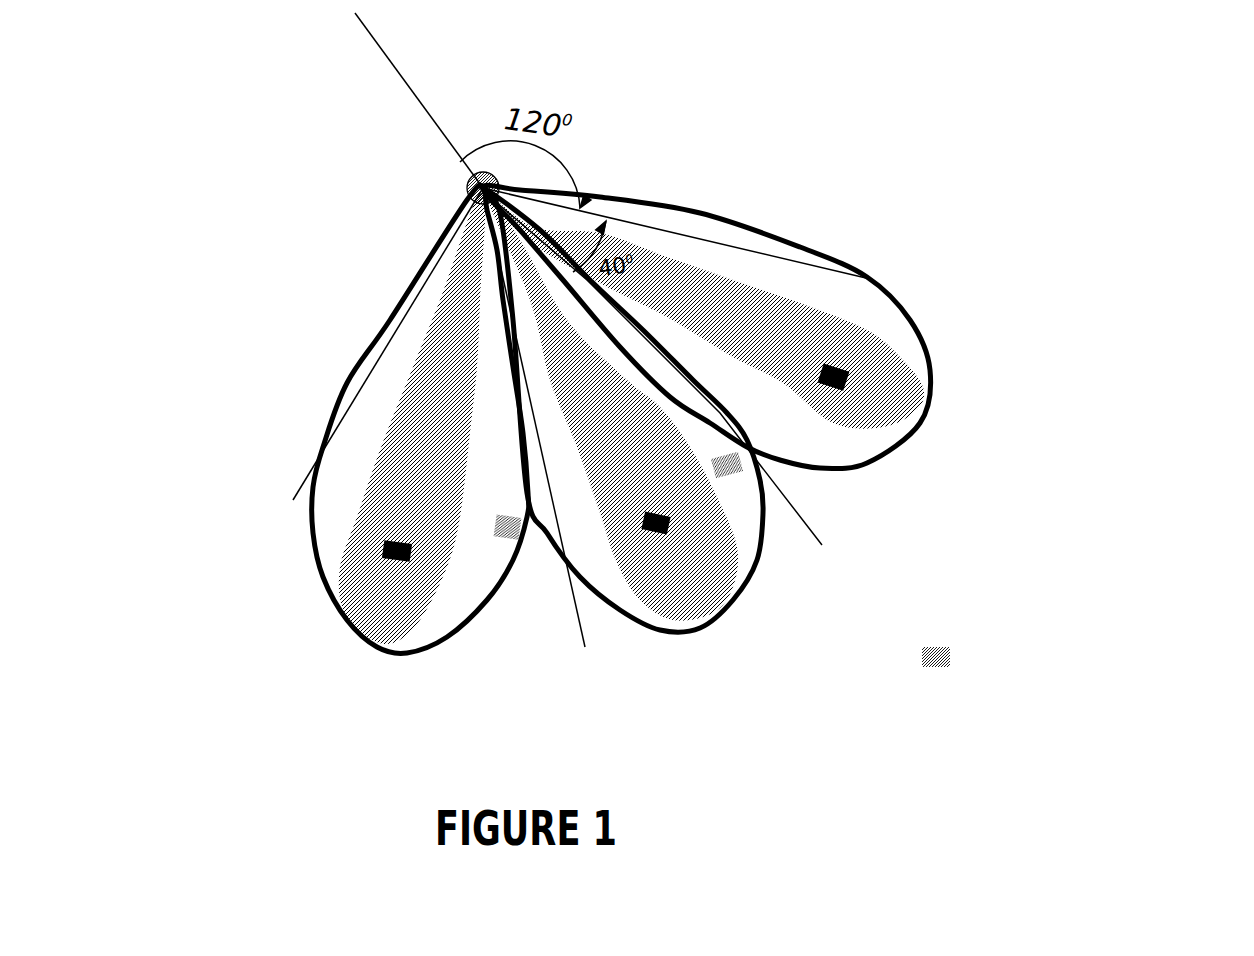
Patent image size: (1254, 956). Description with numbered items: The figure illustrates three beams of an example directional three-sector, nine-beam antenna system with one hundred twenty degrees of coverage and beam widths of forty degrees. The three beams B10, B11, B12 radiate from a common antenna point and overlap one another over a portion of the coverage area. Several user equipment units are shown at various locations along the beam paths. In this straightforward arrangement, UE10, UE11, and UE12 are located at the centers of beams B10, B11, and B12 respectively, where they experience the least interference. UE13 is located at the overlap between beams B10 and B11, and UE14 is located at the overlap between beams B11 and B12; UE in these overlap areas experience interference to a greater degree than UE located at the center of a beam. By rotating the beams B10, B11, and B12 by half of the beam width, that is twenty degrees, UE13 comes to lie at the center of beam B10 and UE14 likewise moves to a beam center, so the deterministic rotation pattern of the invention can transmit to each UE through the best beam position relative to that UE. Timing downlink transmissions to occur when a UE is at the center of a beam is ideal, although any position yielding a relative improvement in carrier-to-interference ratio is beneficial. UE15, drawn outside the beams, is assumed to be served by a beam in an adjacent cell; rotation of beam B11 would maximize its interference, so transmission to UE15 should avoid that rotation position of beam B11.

The beam B10 is at (363, 347).
The beam B11 is at (708, 640).
The beam B12 is at (641, 190).
The user equipment UE10 is at (372, 551).
The user equipment UE11 is at (656, 545).
The user equipment UE12 is at (848, 377).
The user equipment UE13 is at (495, 524).
The user equipment UE14 is at (724, 488).
The user equipment UE15 is at (960, 656).